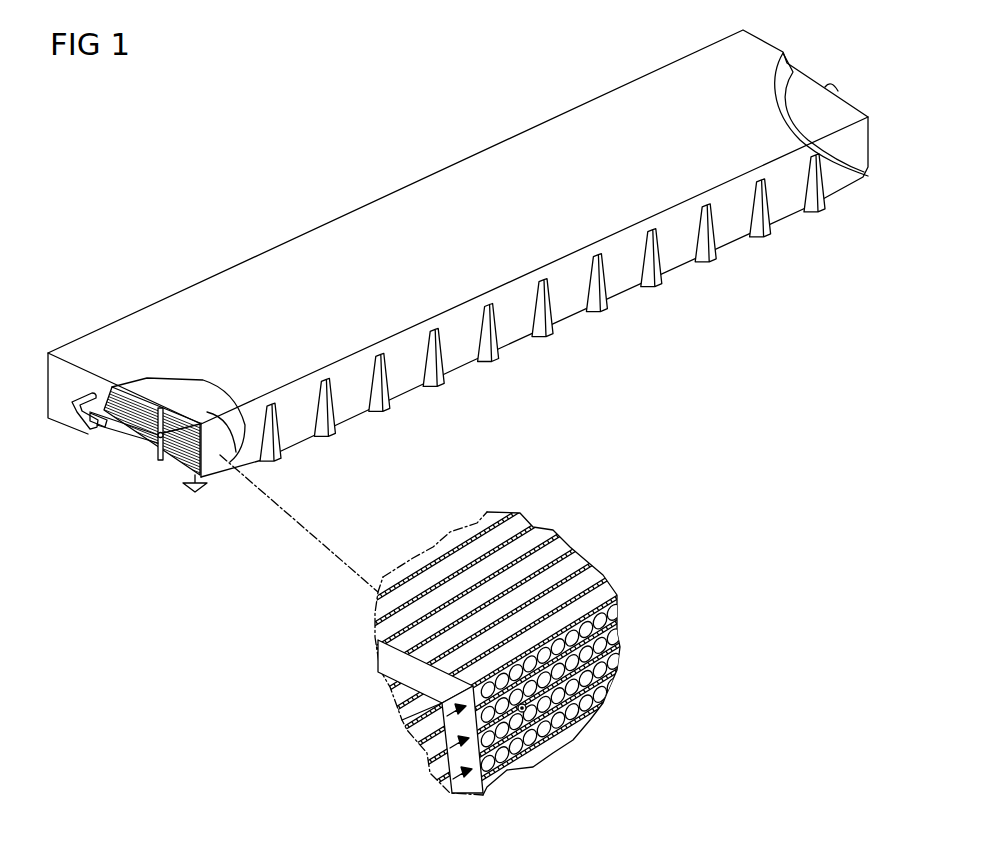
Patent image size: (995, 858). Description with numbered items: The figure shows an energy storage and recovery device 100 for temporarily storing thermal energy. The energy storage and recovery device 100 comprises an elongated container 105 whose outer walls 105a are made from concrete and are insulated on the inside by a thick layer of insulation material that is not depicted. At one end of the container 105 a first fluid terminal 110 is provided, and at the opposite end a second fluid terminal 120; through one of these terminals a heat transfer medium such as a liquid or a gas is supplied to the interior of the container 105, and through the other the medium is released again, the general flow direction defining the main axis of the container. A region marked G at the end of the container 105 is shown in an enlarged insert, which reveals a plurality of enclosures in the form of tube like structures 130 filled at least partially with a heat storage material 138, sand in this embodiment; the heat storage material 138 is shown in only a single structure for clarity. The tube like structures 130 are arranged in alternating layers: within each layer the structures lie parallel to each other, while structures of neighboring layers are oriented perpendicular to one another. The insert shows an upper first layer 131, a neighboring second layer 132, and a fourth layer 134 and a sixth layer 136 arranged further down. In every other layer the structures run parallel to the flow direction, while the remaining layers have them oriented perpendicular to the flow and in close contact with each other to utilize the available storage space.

The energy storage and recovery device 100 is at (297, 115).
The container 105 is at (621, 181).
The outer walls 105a is at (430, 184).
The first fluid terminal 110 is at (92, 418).
The second fluid terminal 120 is at (835, 82).
The upper first layer 131 is at (458, 506).
The tube like structures 130 is at (608, 600).
The second layer 132 is at (435, 715).
The fourth layer 134 is at (437, 745).
The sixth layer 136 is at (447, 778).
The heat storage material 138 is at (530, 709).
The cover G is at (178, 420).